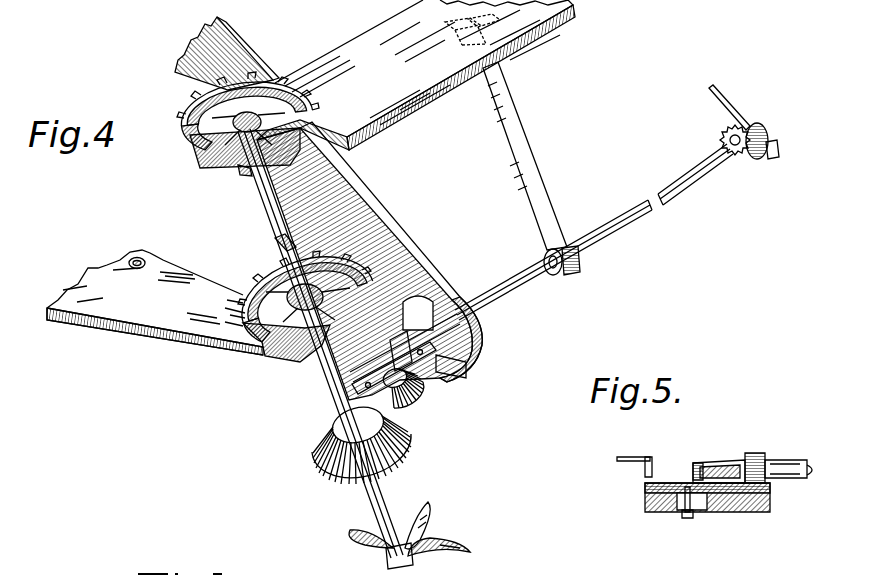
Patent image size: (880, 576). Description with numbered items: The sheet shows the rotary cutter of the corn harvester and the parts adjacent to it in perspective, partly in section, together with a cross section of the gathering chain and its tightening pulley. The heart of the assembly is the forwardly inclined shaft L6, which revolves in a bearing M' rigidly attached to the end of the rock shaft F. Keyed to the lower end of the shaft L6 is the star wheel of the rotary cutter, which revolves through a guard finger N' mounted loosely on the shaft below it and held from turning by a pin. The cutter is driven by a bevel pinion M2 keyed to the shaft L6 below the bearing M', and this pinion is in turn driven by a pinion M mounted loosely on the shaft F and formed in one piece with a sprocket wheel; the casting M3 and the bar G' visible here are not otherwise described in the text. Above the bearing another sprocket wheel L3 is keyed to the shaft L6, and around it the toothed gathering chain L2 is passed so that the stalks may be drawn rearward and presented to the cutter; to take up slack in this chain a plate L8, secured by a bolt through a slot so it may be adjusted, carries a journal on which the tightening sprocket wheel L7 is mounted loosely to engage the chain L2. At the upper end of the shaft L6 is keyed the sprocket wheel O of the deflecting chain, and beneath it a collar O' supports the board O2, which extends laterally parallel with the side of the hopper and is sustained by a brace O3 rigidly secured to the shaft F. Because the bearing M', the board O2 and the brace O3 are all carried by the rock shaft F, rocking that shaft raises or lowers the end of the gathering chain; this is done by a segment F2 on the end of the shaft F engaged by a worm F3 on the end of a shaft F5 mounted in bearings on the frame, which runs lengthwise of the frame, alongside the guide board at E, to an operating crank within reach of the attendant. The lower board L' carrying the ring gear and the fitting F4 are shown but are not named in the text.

In FIG. 4, the frame post E is at (200, 84).
In FIG. 4, the sprocket wheel O is at (248, 120).
In FIG. 4, the collar O' is at (224, 200).
In FIG. 4, the board O2 is at (425, 75).
In FIG. 4, the brace O3 is at (514, 157).
In FIG. 4, the casting frame with bearing boss M3 is at (480, 333).
In FIG. 4, the bearing M' is at (325, 349).
In FIG. 4, the bevel pinion M2 is at (334, 476).
In FIG. 4, the pinion M is at (413, 391).
In FIG. 4, the lever bar G' is at (427, 368).
In FIG. 4, the rock shaft F is at (497, 293).
In FIG. 4, the segment F2 is at (722, 132).
In FIG. 4, the worm F3 is at (757, 130).
In FIG. 4, the bracket F4 is at (777, 148).
In FIG. 4, the shaft F5 is at (729, 103).
In FIG. 4, the lower plank L' is at (155, 302).
In FIG. 4, the sprocket wheel L3 is at (258, 296).
In FIG. 5, the sprocket wheel L3 is at (745, 500).
In FIG. 4, the forwardly inclined shaft L6 is at (278, 222).
In FIG. 4, the guard finger N' is at (443, 529).
In FIG. 5, the toothed gathering chain L2 is at (700, 460).
In FIG. 5, the sprocket wheel L7 is at (730, 470).
In FIG. 5, the plate L8 is at (763, 488).